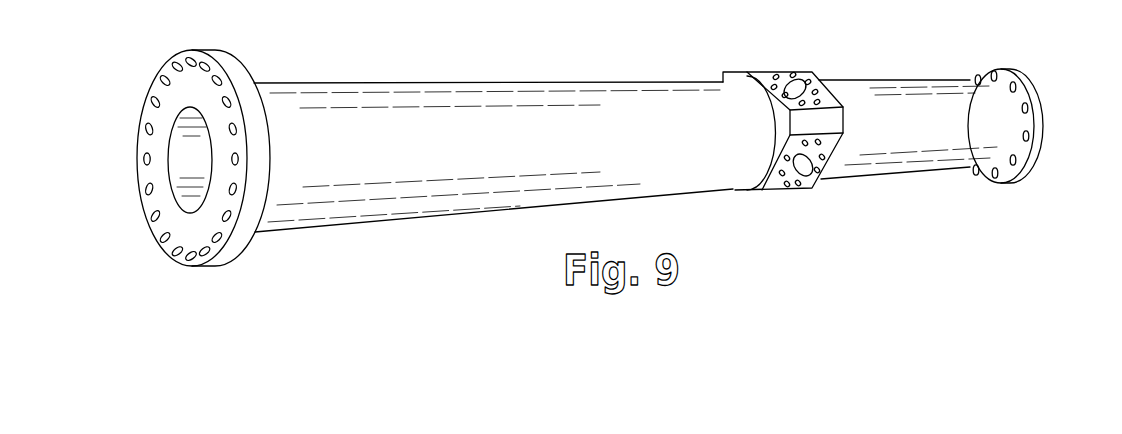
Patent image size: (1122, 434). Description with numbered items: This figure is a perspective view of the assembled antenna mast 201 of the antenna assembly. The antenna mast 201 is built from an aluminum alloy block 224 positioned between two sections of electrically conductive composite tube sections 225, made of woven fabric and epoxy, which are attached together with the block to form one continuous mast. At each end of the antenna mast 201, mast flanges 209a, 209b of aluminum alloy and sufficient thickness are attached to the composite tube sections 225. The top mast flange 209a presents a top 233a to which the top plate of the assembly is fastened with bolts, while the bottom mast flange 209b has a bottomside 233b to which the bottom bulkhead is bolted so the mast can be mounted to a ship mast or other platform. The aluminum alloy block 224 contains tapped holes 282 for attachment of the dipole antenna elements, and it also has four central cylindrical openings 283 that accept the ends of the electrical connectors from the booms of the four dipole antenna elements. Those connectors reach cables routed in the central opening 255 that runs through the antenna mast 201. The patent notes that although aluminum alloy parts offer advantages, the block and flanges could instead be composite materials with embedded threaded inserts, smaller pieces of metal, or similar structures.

The antenna mast 201 is at (942, 226).
The composite tube sections 225 is at (568, 150).
The top mast flange 209a is at (1006, 68).
The bottom mast flange 209b is at (193, 50).
The top of the top mast flange 233a is at (972, 75).
The bottomside of the bottom mast flange 233b is at (152, 121).
The central opening 255 is at (190, 158).
The aluminum alloy block 224 is at (741, 70).
The tapped holes 282 is at (794, 73).
The central cylindrical openings 283 is at (797, 80).